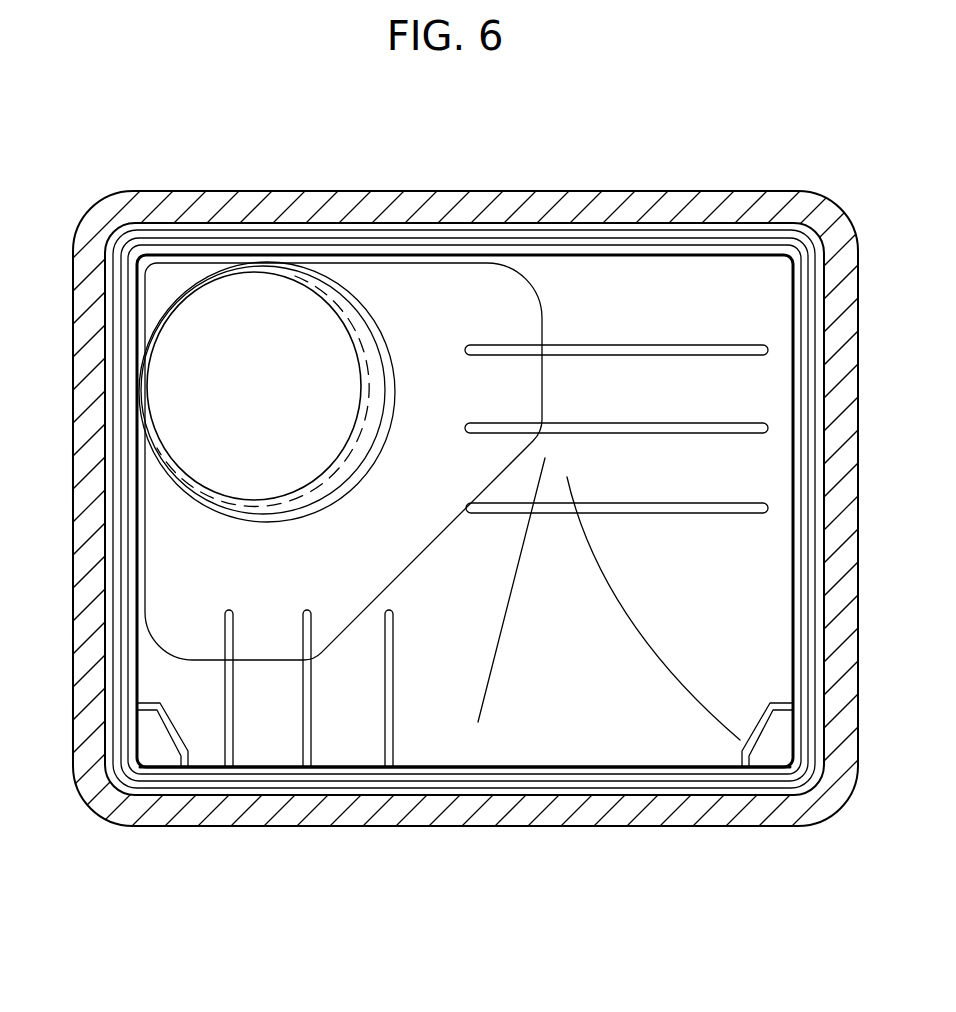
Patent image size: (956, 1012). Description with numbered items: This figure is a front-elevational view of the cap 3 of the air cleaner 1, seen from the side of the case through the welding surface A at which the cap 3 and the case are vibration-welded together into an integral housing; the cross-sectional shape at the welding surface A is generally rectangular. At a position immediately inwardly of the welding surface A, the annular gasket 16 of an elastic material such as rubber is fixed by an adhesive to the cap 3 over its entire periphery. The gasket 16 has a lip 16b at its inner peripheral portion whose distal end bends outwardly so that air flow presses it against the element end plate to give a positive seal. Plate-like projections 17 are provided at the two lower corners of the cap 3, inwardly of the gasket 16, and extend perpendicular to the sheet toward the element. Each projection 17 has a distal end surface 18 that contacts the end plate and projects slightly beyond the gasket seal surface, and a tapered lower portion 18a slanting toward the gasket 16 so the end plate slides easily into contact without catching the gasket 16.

The air cleaner 1 is at (407, 828).
The cap 3 is at (719, 278).
The welding surface A is at (586, 828).
The annular gasket 16 is at (292, 772).
The lip 16b is at (540, 772).
The plate-like projection 17 is at (139, 762).
The distal end surface 18 is at (172, 728).
The lower portion of the distal end surface 18a is at (172, 728).